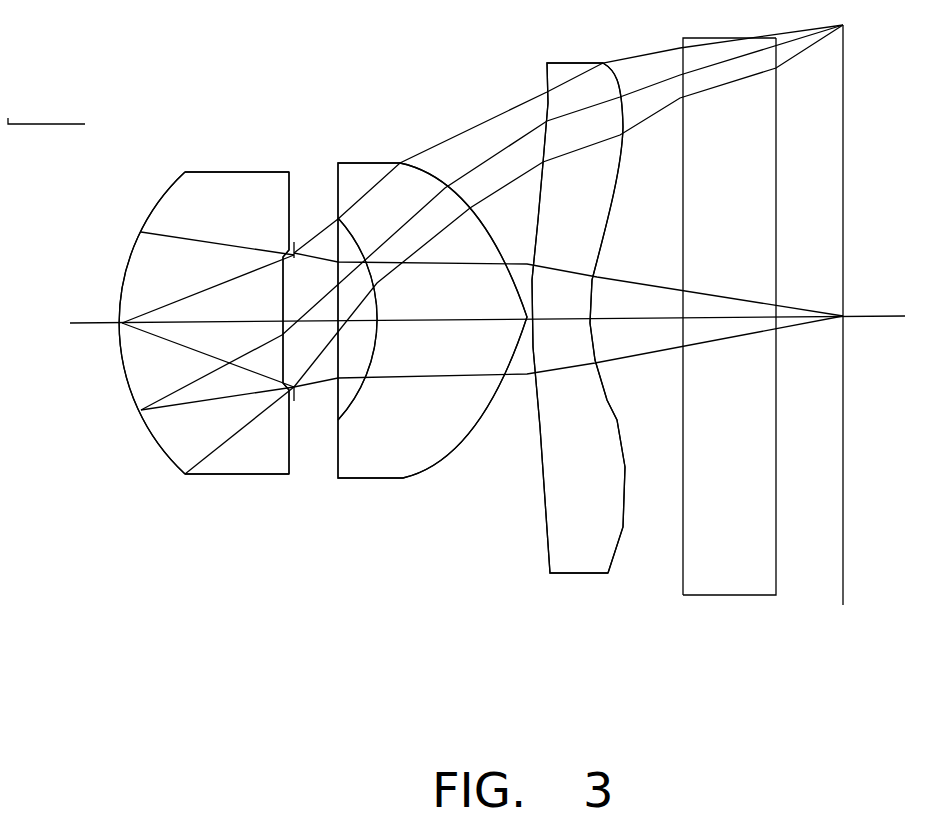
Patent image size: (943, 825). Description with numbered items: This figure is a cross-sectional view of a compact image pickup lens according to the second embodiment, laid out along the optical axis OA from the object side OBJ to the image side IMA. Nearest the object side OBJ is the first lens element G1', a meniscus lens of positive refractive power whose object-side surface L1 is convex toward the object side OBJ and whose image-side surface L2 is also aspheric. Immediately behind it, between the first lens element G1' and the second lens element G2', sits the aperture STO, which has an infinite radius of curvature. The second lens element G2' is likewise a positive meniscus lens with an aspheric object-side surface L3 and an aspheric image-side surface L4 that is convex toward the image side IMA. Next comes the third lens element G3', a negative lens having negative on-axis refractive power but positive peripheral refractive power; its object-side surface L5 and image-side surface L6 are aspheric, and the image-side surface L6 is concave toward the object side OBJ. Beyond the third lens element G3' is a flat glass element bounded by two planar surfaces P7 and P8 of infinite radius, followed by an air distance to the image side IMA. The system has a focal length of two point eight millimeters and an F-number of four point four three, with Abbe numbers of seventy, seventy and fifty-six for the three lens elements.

The object side OBJ is at (46, 107).
The optical axis OA is at (463, 324).
The aperture STO is at (294, 234).
The object-side surface of the first lens element L1 is at (162, 450).
The image-side surface of the first lens element L2 is at (290, 453).
The first lens element G1' is at (204, 360).
The object-side surface of the second lens element L3 is at (337, 185).
The image-side surface of the second lens element L4 is at (423, 472).
The second lens element G2' is at (432, 362).
The object-side surface of the third lens element L5 is at (548, 553).
The image-side surface of the third lens element L6 is at (620, 562).
The third lens element G3' is at (575, 353).
The planar surface P7 is at (683, 580).
The planar surface P8 is at (777, 580).
The image side IMA is at (846, 335).